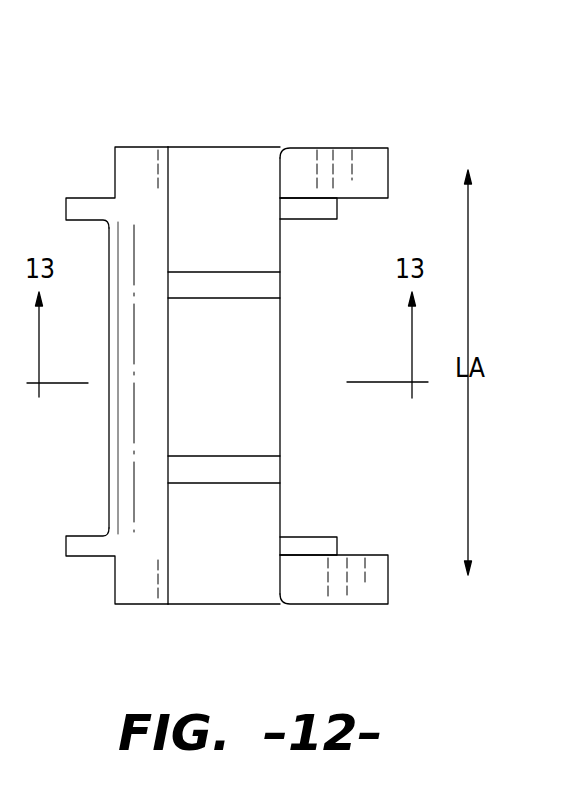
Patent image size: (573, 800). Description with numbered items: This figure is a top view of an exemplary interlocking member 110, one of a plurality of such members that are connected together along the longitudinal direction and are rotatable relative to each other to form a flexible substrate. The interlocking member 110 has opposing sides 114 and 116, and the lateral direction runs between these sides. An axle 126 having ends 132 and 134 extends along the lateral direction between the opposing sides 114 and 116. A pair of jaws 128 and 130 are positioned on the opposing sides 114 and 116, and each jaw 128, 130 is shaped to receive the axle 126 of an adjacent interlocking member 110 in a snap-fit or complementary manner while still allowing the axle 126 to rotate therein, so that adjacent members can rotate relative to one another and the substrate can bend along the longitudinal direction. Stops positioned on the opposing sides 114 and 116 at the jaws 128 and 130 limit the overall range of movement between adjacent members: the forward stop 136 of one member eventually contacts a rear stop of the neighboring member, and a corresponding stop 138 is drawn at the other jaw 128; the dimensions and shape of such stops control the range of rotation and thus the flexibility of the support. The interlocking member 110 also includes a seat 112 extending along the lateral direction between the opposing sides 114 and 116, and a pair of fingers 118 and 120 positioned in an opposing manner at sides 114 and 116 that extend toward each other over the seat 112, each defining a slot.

The interlocking member 110 is at (296, 58).
The seat 112 is at (262, 390).
The side 114 is at (343, 130).
The side 116 is at (344, 621).
The finger 118 is at (264, 243).
The finger 120 is at (263, 516).
The axle 126 is at (143, 464).
The jaw 128 is at (402, 578).
The jaw 130 is at (400, 169).
The end 132 is at (137, 138).
The end 134 is at (137, 613).
The forward stop 136 is at (346, 207).
The lower shoulder 138 is at (349, 544).